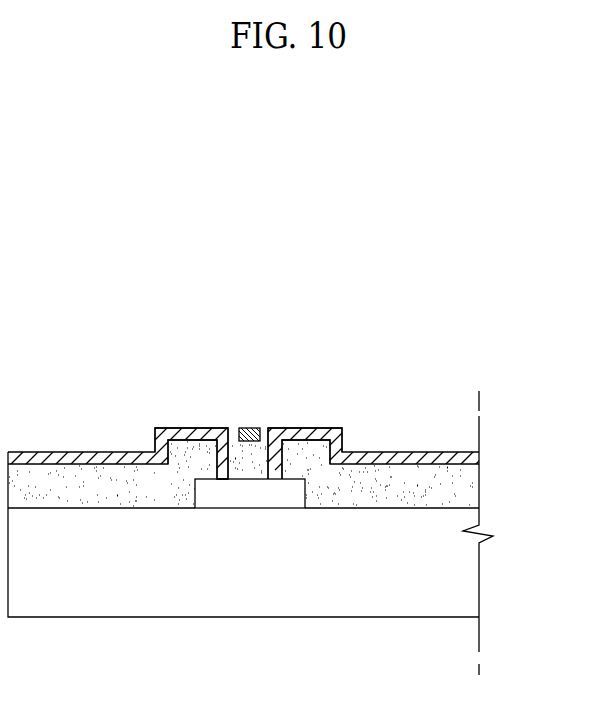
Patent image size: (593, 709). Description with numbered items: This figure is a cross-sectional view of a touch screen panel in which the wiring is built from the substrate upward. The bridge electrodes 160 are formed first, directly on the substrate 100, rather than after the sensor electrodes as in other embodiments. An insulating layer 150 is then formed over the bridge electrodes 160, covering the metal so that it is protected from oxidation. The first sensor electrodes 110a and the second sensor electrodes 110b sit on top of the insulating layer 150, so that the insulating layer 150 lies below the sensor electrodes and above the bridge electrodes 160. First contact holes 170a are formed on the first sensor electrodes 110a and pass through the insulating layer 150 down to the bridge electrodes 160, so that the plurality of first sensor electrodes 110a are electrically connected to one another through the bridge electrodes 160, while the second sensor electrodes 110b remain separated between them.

The substrate 100 is at (445, 577).
The insulating layer 150 is at (443, 487).
The bridge electrode 160 is at (233, 492).
The first sensor electrode 110a is at (76, 458).
The second sensor electrode 110b is at (247, 428).
The first contact hole 170a is at (227, 459).